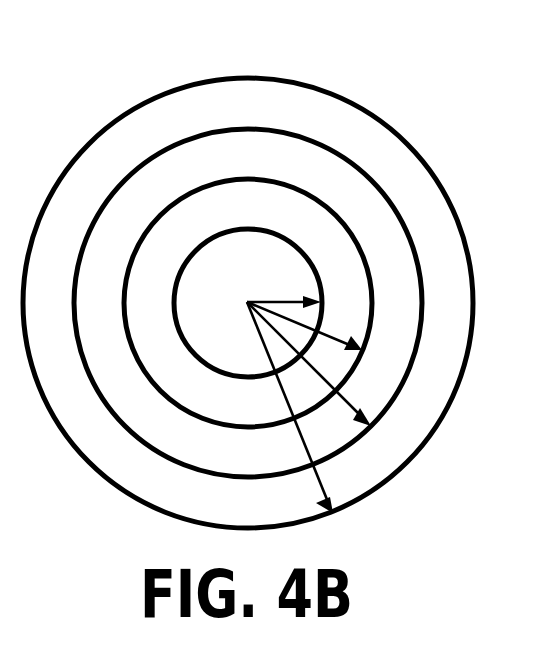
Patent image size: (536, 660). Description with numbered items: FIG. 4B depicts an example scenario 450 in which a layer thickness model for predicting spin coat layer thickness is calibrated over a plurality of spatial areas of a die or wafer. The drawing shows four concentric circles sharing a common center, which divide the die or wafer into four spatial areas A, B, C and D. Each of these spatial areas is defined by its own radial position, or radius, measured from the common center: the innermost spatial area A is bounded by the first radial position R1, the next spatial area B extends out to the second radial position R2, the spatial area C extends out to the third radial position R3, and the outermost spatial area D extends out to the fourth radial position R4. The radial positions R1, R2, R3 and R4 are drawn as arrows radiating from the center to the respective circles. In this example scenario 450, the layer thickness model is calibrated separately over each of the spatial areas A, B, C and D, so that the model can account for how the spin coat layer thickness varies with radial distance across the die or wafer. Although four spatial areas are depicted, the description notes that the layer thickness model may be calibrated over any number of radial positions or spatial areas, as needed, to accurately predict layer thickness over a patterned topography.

The example scenario 450 is at (267, 276).
The spatial area A is at (248, 303).
The spatial area B is at (248, 303).
The spatial area C is at (248, 303).
The spatial area D is at (248, 303).
The first radial position R1 is at (284, 289).
The second radial position R2 is at (308, 326).
The third radial position R3 is at (318, 364).
The fourth radial position R4 is at (308, 407).